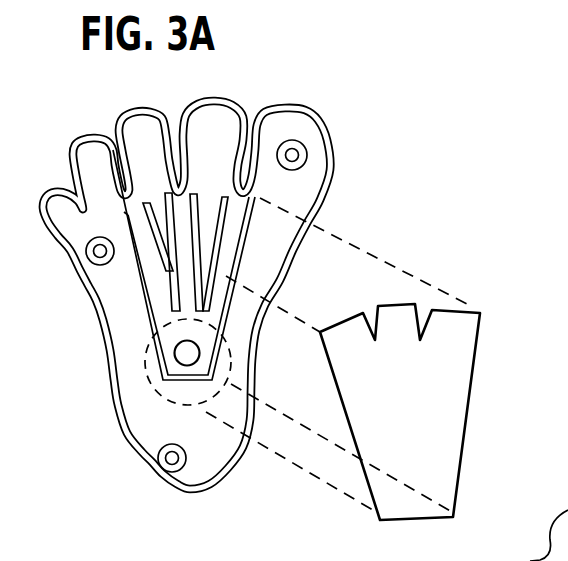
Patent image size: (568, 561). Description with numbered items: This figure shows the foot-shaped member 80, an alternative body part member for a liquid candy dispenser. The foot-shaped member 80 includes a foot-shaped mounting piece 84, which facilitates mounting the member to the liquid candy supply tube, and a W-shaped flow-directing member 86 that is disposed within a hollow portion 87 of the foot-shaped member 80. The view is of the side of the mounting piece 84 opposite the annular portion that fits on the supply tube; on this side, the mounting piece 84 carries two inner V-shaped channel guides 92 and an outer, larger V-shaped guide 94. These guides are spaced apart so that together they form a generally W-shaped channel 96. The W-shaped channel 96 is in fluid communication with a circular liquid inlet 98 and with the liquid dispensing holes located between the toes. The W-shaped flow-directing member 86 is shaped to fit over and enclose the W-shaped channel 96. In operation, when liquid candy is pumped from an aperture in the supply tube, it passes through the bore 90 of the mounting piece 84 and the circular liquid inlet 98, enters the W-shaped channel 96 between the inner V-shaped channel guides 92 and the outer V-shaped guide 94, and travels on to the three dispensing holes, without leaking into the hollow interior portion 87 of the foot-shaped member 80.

The foot-shaped member 80 is at (371, 231).
The foot-shaped mounting piece 84 is at (76, 274).
The W-shaped flow-directing member 86 is at (473, 430).
The hollow portion 87 is at (205, 462).
The bore 90 is at (223, 375).
The inner V-shaped channel guides 92 is at (175, 298).
The outer V-shaped guide 94 is at (152, 335).
The W-shaped channel 96 is at (165, 311).
The circular liquid inlet 98 is at (174, 357).